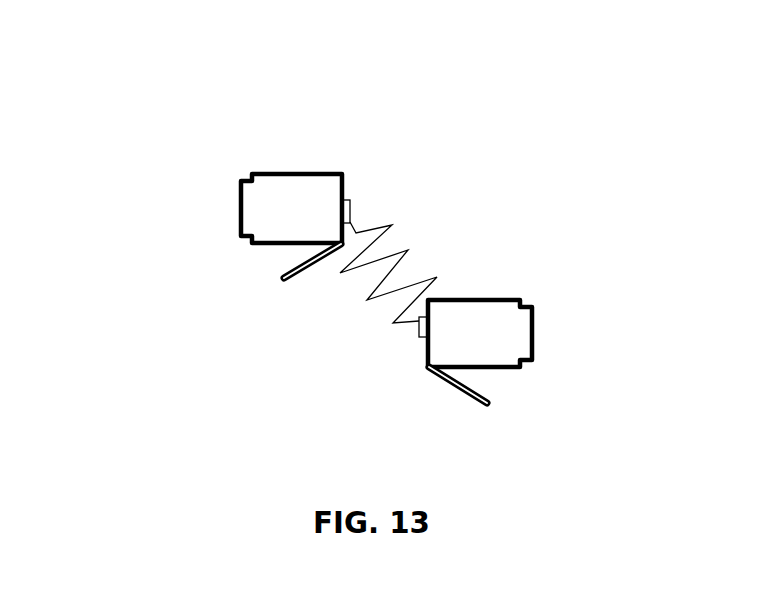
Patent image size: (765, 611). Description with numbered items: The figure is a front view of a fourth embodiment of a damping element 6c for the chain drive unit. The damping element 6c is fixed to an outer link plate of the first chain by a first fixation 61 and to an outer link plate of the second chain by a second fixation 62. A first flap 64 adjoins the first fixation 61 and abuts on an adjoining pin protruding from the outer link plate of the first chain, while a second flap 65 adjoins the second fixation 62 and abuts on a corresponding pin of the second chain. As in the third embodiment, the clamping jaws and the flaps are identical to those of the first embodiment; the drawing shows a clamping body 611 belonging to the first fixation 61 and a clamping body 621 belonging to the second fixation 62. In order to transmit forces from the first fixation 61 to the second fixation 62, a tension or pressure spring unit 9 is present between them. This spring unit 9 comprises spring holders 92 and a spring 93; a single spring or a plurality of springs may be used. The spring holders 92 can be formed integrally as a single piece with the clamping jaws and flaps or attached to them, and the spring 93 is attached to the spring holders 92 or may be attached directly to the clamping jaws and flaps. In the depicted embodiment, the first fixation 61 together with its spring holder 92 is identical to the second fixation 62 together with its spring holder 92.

The damping element 6c is at (155, 127).
The first fixation 61 is at (177, 304).
The first connecting body 611 is at (275, 208).
The first flap 64 is at (292, 283).
The second fixation 62 is at (589, 395).
The second connecting body 621 is at (507, 325).
The second flap 65 is at (475, 402).
The tension or pressure spring unit 9 is at (431, 168).
The spring holder 92 is at (350, 207).
The spring 93 is at (406, 250).